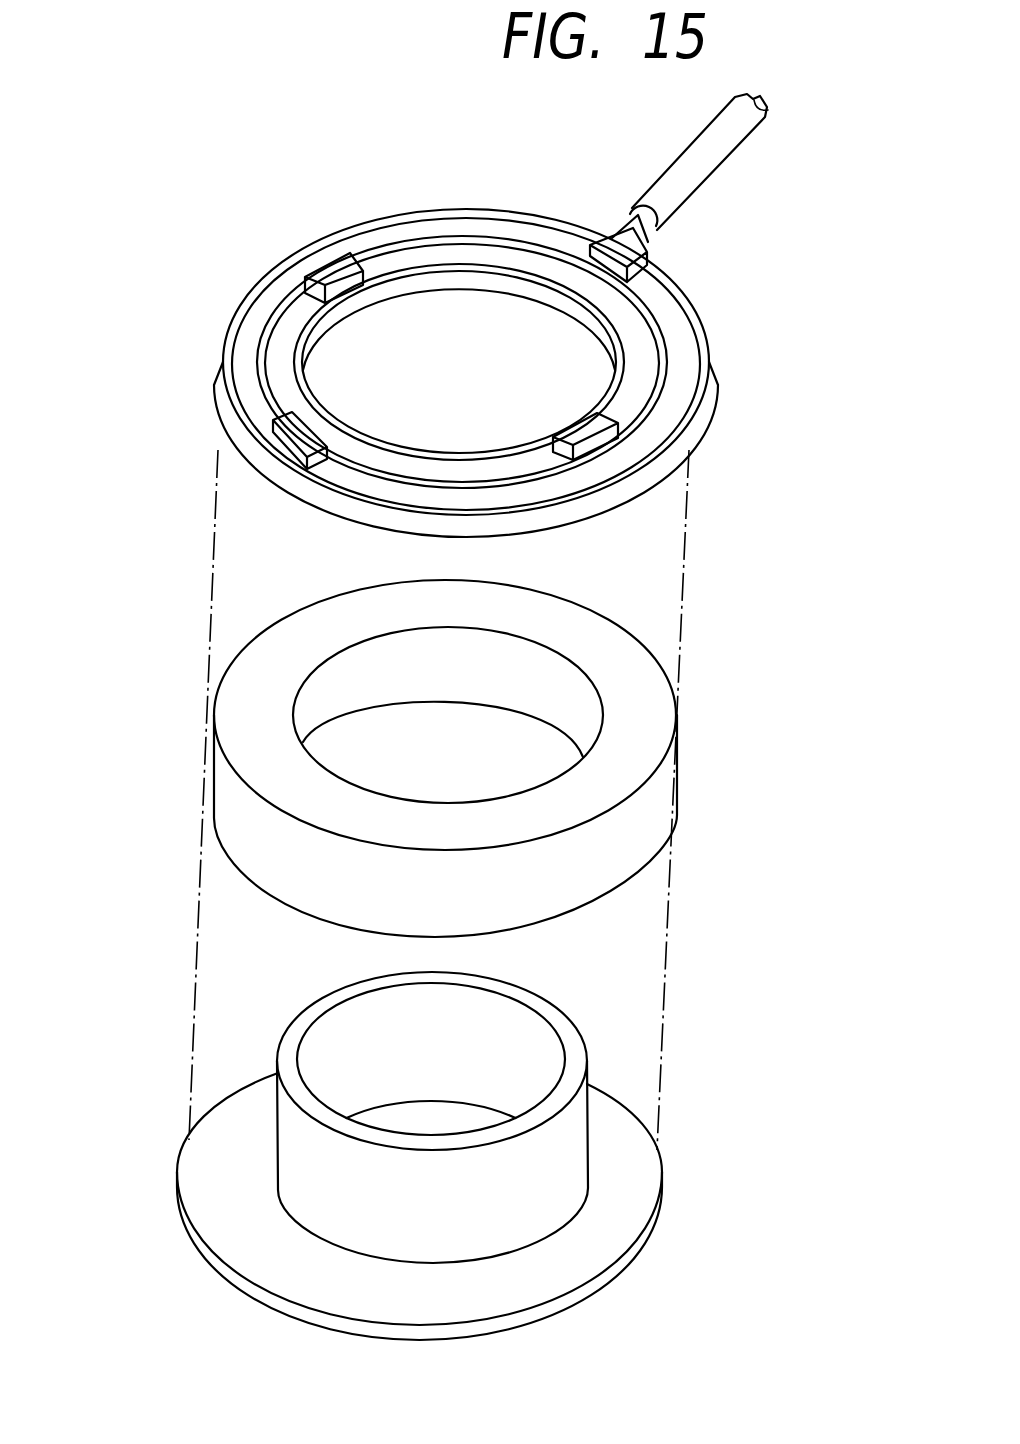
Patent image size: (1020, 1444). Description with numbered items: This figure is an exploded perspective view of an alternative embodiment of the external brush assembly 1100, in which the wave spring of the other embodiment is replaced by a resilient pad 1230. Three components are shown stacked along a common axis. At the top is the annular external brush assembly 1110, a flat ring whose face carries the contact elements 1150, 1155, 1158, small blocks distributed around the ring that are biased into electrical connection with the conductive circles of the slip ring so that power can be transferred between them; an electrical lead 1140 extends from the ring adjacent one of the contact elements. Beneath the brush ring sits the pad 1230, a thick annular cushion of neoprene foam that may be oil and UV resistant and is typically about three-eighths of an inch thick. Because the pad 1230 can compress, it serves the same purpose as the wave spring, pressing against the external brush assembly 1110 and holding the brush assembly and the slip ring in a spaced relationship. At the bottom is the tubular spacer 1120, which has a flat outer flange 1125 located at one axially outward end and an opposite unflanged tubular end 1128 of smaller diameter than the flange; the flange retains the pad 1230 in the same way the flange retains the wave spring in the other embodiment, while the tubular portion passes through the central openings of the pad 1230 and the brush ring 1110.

The external brush assembly 1100 is at (48, 535).
The external brush assembly 1110 is at (226, 373).
The spacer 1120 is at (158, 1260).
The flange 1125 is at (597, 1248).
The cylindrical sleeve 1128 is at (550, 1137).
The electrical lead 1140 is at (700, 162).
The contact elements 1150 is at (333, 270).
The tab 1155 is at (300, 435).
The tab 1158 is at (587, 432).
The pad 1230 is at (247, 800).